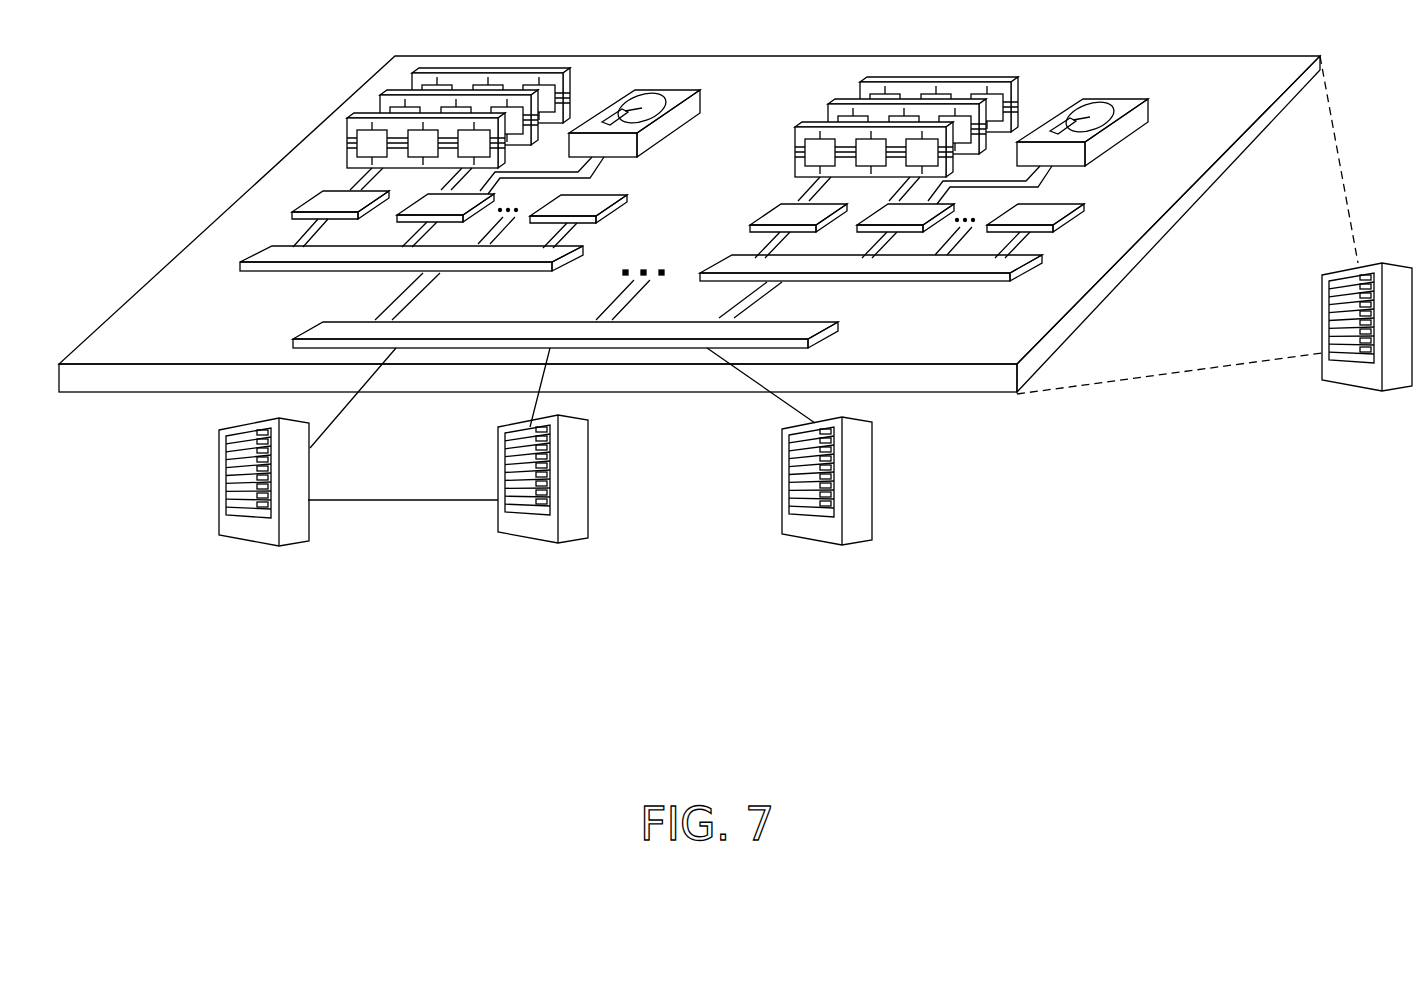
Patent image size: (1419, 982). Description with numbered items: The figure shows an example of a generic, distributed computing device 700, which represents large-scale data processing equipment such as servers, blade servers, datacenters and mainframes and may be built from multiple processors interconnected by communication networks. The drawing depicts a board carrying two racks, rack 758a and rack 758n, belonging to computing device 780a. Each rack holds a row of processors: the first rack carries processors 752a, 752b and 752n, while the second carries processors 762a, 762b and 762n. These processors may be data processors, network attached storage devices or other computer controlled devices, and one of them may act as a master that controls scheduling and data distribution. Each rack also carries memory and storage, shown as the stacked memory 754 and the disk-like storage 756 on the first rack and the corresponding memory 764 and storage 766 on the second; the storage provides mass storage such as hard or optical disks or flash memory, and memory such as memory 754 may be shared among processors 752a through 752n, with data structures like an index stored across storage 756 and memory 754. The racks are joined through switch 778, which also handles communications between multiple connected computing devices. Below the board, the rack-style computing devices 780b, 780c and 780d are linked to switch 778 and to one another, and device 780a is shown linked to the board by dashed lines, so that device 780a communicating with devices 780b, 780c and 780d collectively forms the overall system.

The computing device 700 is at (230, 78).
The processor 752a is at (333, 199).
The processor 752b is at (437, 200).
The processor 752n is at (592, 206).
The memory 754 is at (498, 72).
The storage 756 is at (662, 90).
The rack 758a is at (280, 257).
The rack 758n is at (990, 262).
The processor 762a is at (800, 212).
The processor 762b is at (898, 210).
The processor 762n is at (1040, 215).
The memory 764 is at (946, 80).
The storage 766 is at (1110, 99).
The switch 778 is at (325, 331).
The computing device 780a is at (1322, 295).
The computing device 780b is at (219, 480).
The computing device 780c is at (498, 470).
The computing device 780d is at (782, 482).